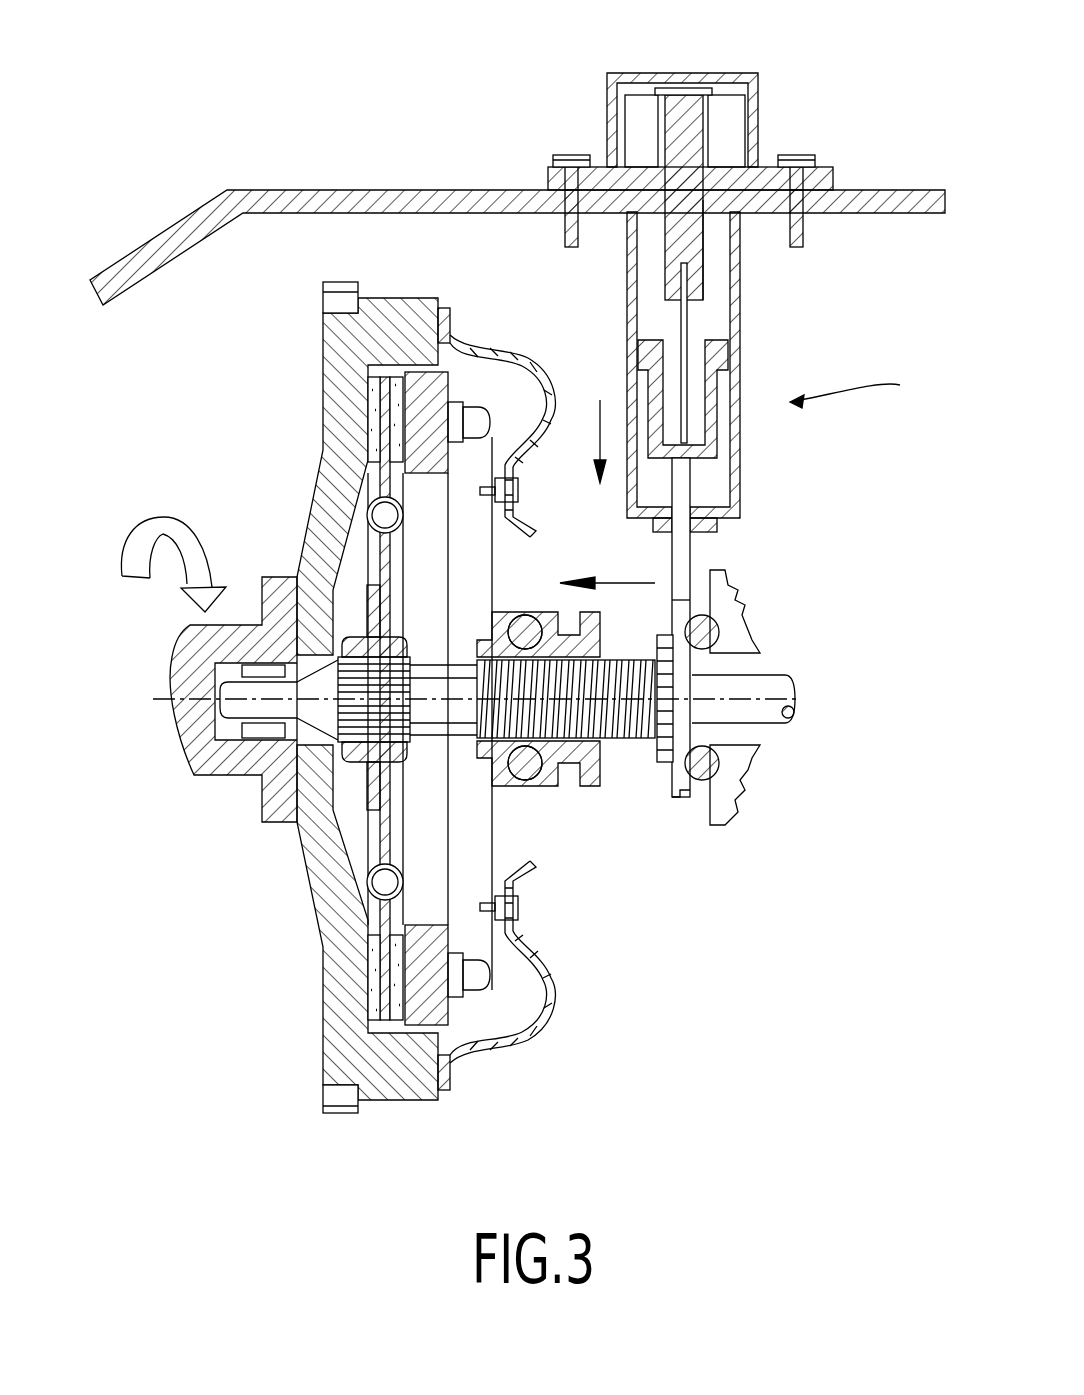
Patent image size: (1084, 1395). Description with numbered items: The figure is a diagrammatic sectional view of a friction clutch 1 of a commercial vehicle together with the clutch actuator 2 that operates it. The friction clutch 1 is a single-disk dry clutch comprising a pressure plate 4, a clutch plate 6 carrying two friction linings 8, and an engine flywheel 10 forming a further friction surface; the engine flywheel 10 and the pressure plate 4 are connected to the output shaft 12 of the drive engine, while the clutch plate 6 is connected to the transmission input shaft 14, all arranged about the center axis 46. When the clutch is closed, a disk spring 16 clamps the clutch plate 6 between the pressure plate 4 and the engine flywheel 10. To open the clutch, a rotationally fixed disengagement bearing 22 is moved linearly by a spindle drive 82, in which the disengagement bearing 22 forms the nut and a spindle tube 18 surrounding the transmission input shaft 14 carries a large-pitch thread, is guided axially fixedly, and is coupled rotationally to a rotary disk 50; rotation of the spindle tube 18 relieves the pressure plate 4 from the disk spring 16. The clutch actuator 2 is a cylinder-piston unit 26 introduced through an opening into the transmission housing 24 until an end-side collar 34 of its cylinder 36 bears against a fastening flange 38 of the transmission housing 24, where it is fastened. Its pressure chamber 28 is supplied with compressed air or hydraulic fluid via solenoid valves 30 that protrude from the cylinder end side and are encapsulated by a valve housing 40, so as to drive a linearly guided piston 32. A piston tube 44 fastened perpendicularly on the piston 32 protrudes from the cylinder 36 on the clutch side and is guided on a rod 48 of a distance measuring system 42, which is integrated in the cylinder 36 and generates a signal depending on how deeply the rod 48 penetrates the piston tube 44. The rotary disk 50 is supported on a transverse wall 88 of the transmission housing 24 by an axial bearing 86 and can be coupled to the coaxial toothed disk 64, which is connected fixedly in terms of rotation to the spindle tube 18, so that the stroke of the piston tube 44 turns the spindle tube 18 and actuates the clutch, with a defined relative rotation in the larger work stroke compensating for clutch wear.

The friction clutch 1 is at (232, 849).
The clutch actuator 2 is at (856, 381).
The pressure plate 4 is at (420, 925).
The clutch plate 6 is at (395, 815).
The friction linings 8 is at (397, 457).
The engine flywheel 10 is at (323, 418).
The output shaft 12 is at (180, 660).
The transmission input shaft 14 is at (785, 688).
The disk spring 16 is at (532, 1020).
The spindle tube 18 is at (480, 668).
The disengagement bearing 22 is at (527, 590).
The transmission housing 24 is at (328, 188).
The cylinder-piston unit 26 is at (630, 282).
The pressure chamber 28 is at (715, 287).
The solenoid valves 30 is at (725, 115).
The piston 32 is at (717, 355).
The end-side collar 34 is at (835, 166).
The cylinder 36 is at (740, 470).
The fastening flange 38 is at (548, 180).
The valve housing 40 is at (758, 88).
The distance measuring system 42 is at (667, 232).
The piston tube 44 is at (688, 490).
The center axis 46 is at (164, 702).
The rod 48 is at (683, 318).
The rotary disk 50 is at (680, 797).
The toothed disk 64 is at (662, 760).
The spindle drive 82 is at (613, 645).
The axial bearing 86 is at (712, 630).
The transverse wall 88 is at (735, 795).